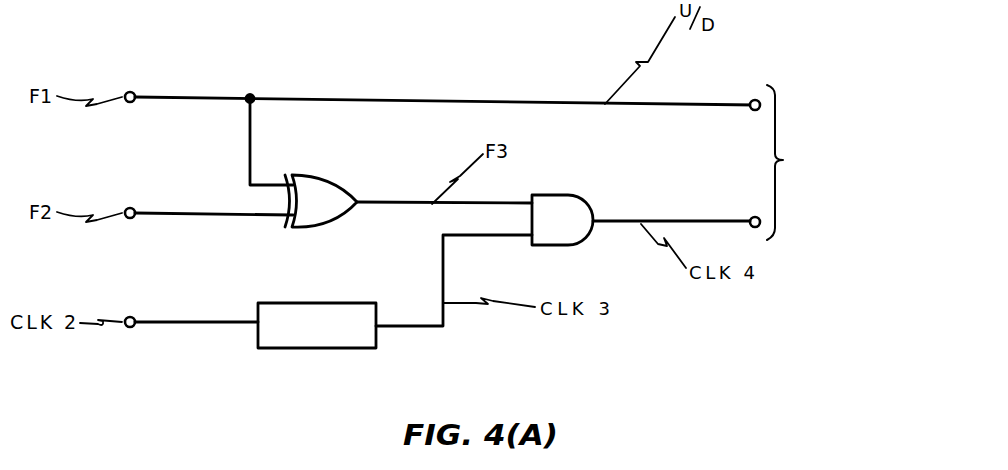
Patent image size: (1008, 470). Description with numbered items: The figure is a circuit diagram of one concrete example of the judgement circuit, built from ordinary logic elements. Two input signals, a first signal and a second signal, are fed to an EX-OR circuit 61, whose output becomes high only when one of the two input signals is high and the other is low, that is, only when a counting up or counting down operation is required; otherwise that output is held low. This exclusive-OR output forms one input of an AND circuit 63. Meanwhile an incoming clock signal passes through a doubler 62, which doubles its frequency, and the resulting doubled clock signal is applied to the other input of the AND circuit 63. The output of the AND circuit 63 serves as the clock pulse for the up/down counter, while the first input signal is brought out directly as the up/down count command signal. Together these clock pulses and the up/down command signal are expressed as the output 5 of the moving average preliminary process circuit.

The EX-OR circuit 61 is at (333, 181).
The doubler 62 is at (322, 303).
The AND circuit 63 is at (581, 199).
The output 5 is at (783, 160).